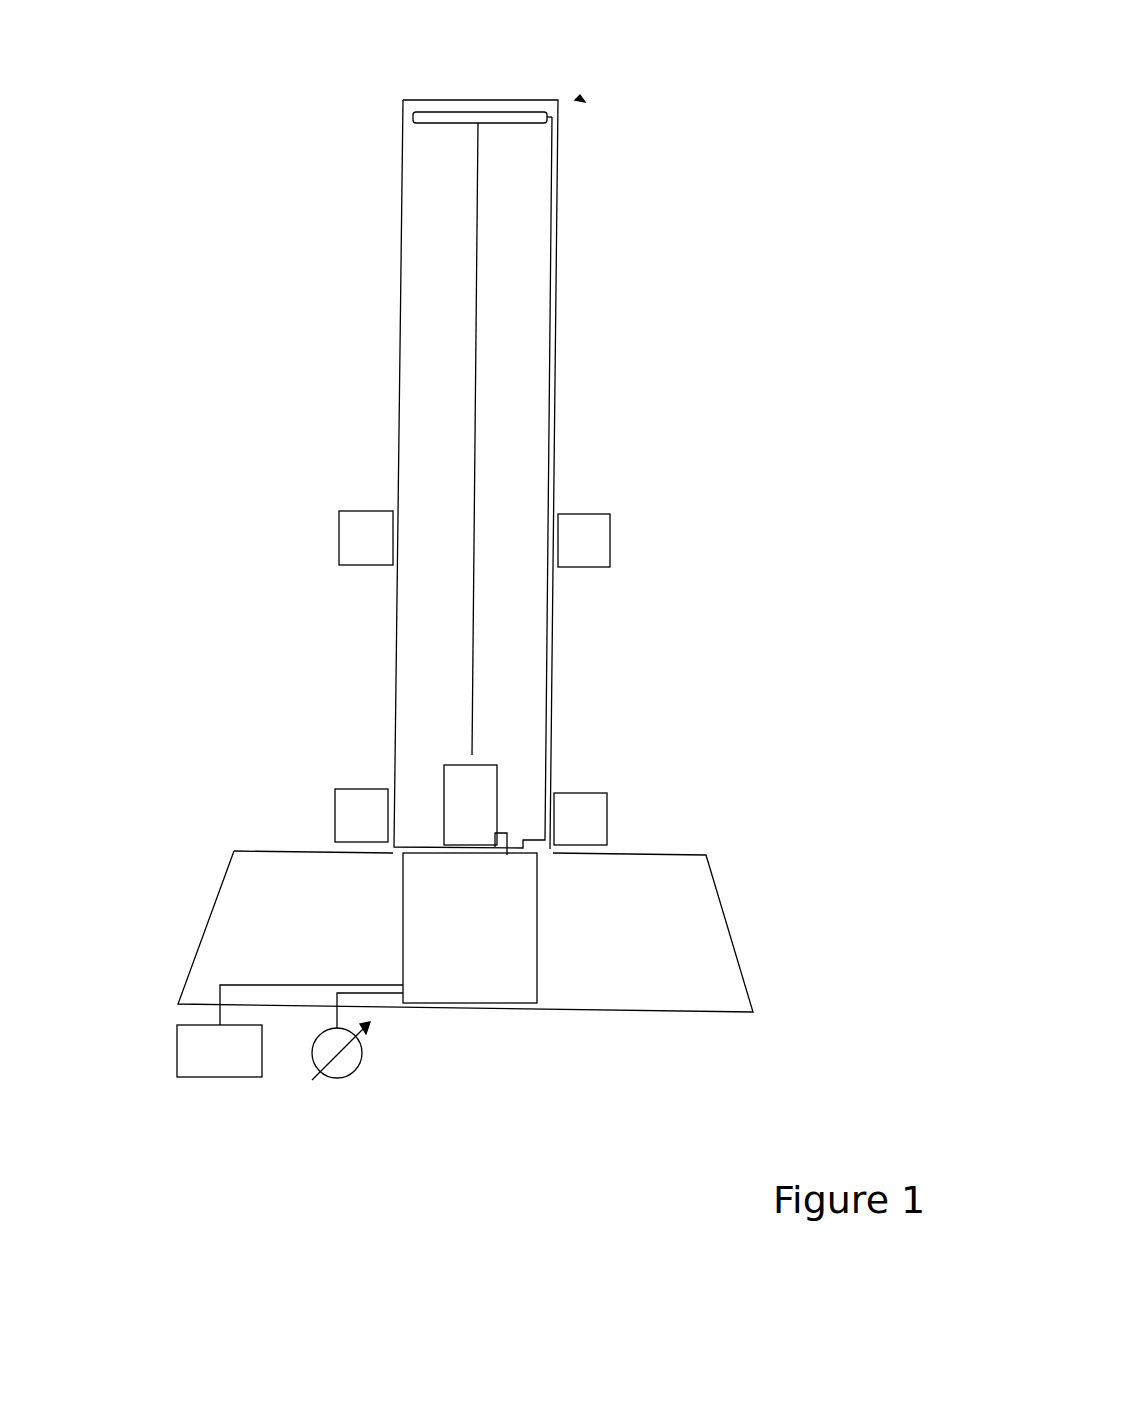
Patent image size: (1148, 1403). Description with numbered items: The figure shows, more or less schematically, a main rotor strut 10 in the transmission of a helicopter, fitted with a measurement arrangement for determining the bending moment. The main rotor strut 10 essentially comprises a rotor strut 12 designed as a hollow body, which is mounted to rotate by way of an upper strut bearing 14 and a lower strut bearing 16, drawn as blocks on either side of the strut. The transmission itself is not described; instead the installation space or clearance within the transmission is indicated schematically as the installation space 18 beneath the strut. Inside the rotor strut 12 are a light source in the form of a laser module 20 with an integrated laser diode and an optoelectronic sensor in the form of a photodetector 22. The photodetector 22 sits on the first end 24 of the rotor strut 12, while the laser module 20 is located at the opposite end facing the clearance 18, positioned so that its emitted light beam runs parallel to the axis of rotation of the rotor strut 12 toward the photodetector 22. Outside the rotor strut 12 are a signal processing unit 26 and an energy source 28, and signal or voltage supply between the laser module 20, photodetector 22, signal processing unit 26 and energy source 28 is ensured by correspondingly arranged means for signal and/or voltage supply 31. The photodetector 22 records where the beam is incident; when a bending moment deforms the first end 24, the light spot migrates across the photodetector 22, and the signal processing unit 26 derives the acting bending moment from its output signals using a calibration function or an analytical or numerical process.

The main rotor strut 10 is at (221, 86).
The rotor strut 12 is at (402, 230).
The upper strut bearing 14 is at (578, 514).
The lower strut bearing 16 is at (587, 793).
The installation space or clearance 18 is at (222, 877).
The laser module 20 is at (443, 770).
The photodetector 22 is at (418, 112).
The first end 24 is at (578, 99).
The signal processing unit 26 is at (230, 1078).
The energy source 28 is at (340, 1080).
The means for signal and/or voltage supply 31 is at (500, 833).